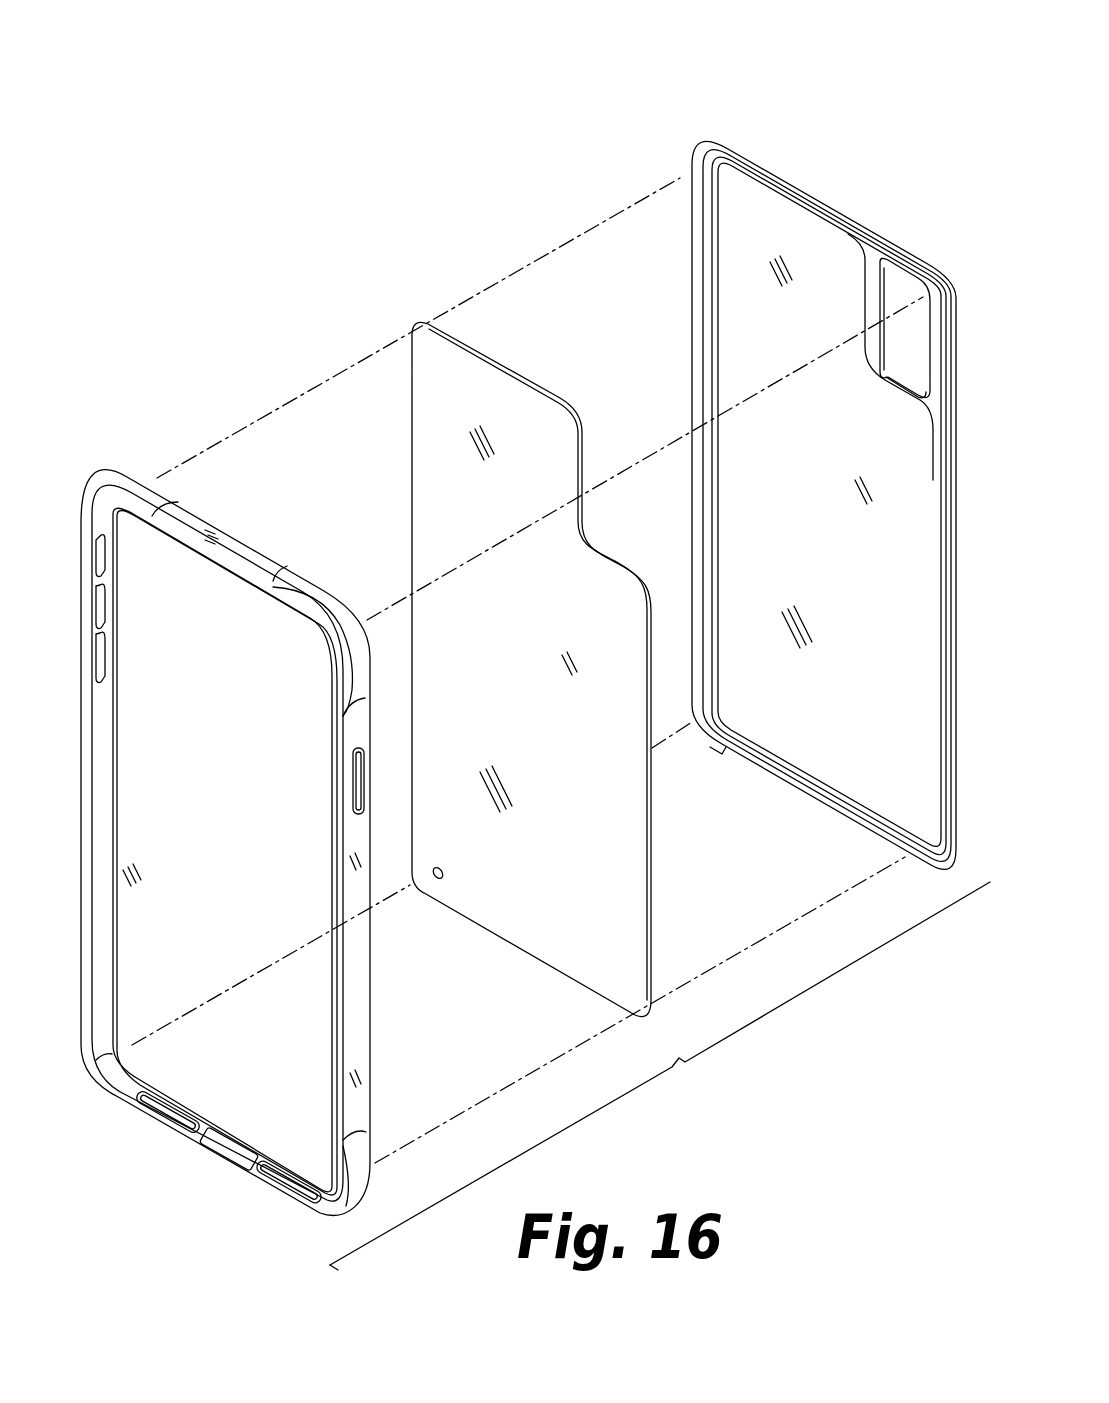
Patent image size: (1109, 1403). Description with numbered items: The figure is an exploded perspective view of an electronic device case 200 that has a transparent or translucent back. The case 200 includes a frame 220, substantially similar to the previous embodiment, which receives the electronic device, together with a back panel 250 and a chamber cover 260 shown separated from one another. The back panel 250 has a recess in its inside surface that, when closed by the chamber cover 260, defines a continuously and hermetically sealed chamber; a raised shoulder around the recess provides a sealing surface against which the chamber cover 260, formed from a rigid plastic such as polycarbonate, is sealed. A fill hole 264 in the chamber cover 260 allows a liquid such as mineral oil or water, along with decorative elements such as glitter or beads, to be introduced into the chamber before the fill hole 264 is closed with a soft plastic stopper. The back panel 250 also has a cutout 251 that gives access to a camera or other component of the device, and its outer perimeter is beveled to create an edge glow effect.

The electronic device case 200 is at (660, 1076).
The frame 220 is at (103, 463).
The back panel 250 is at (694, 128).
The cutout 251 is at (920, 333).
The chamber cover 260 is at (417, 315).
The fill hole 264 is at (430, 889).